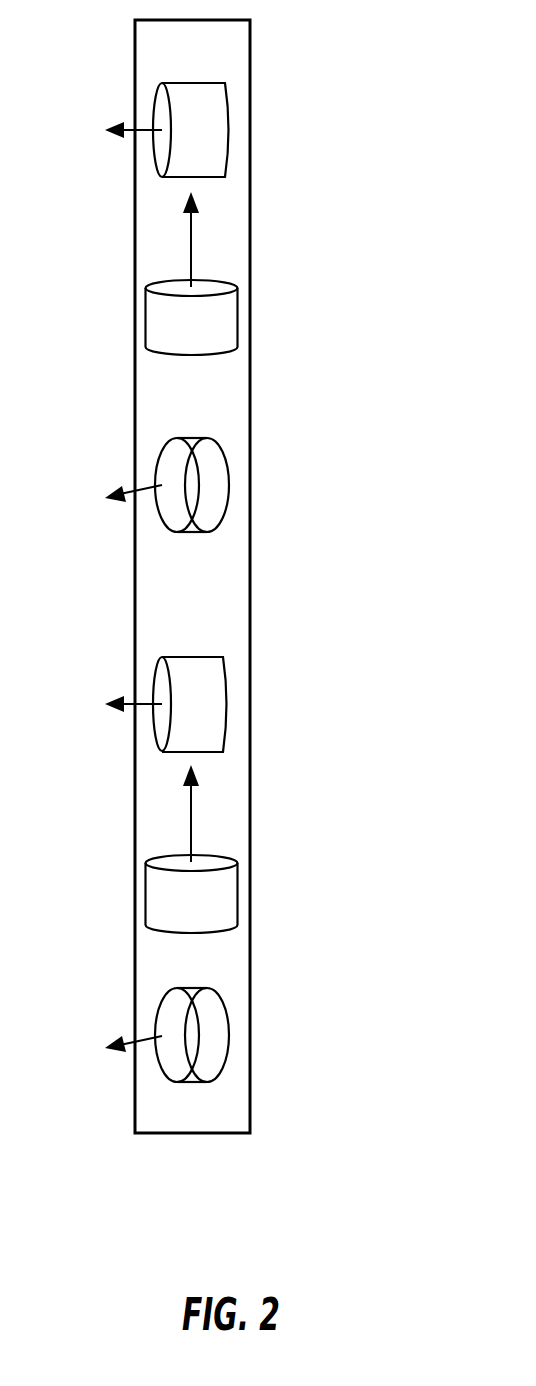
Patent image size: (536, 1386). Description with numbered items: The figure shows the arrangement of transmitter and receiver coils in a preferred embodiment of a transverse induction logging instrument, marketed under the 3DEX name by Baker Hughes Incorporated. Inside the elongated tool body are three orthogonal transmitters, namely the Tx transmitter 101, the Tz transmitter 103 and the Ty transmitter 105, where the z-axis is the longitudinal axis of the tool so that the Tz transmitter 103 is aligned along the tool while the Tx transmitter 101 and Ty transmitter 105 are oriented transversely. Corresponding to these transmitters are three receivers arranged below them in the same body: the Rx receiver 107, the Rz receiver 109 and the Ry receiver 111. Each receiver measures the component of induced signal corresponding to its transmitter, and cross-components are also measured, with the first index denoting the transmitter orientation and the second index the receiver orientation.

The Tx transmitter 101 is at (307, 136).
The Tz transmitter 103 is at (307, 329).
The Ty transmitter 105 is at (307, 488).
The Rx receiver 107 is at (310, 705).
The Rz receiver 109 is at (310, 894).
The Ry receiver 111 is at (310, 1034).